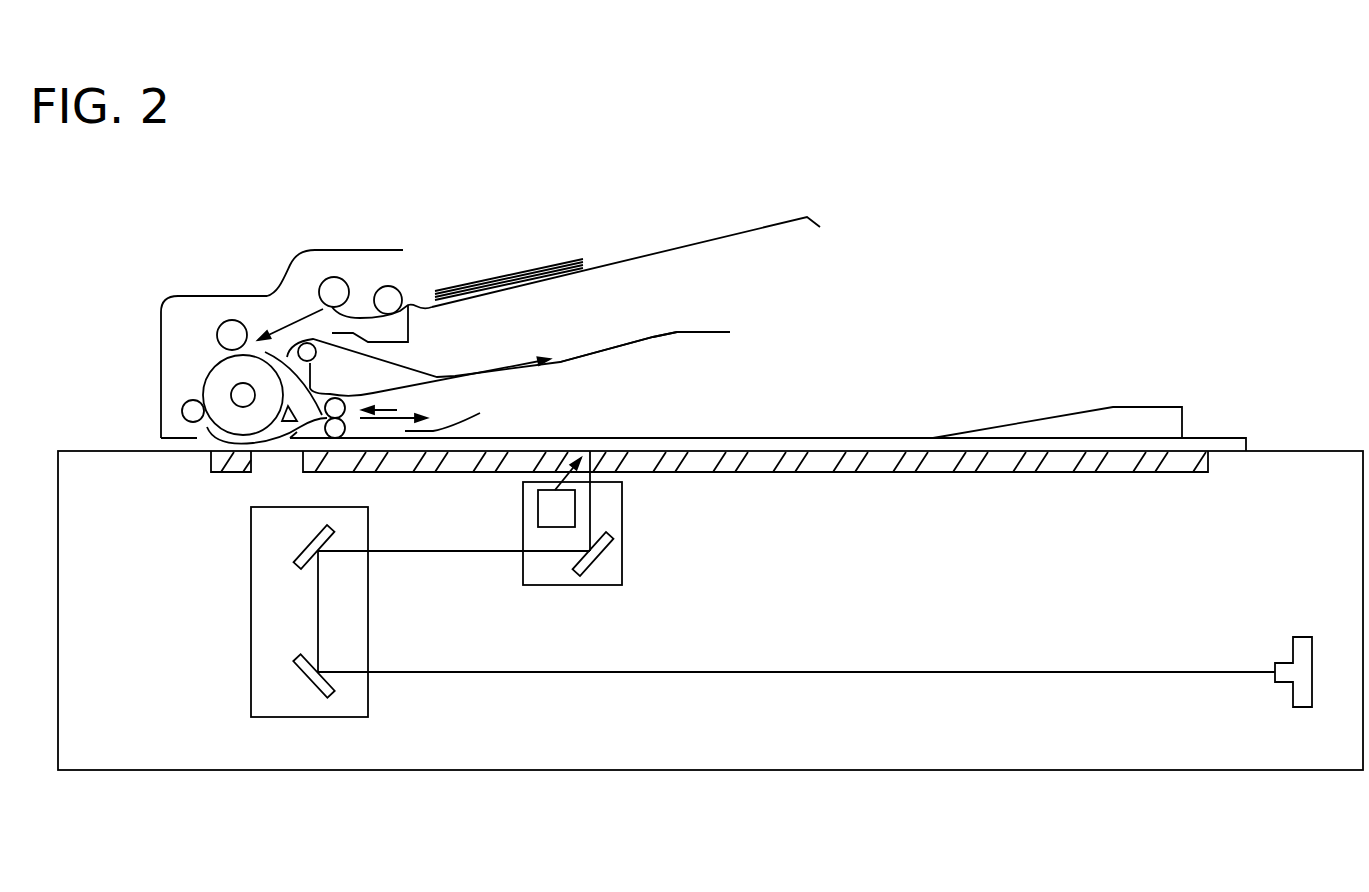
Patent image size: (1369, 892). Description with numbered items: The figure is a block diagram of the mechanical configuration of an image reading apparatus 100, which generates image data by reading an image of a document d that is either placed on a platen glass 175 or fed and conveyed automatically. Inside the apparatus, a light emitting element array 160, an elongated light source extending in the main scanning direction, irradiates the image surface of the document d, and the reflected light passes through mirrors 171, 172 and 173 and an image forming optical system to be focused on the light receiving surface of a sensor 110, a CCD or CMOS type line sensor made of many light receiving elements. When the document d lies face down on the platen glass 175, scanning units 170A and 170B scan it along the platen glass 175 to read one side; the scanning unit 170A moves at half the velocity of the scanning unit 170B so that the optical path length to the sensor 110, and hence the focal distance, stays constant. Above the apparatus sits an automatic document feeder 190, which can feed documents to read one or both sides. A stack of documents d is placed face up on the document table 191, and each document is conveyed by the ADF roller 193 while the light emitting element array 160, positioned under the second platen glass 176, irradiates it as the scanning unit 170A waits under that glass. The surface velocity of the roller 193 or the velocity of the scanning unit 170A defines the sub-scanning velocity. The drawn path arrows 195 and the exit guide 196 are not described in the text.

The image reading apparatus 100 is at (732, 583).
The sensor 110 is at (1298, 707).
The light emitting element array 160 is at (538, 510).
The scanning unit 170A is at (547, 585).
The scanning unit 170B is at (327, 717).
The mirror 171 is at (610, 552).
The mirror 172 is at (292, 555).
The mirror 173 is at (293, 668).
The platen glass 175 is at (1000, 472).
The second platen glass 176 is at (215, 473).
The automatic document feeder 190 is at (341, 189).
The document table 191 is at (522, 288).
The ADF roller 193 is at (212, 385).
The conveying path 195 is at (473, 412).
The discharge tray 196 is at (653, 335).
The document d is at (495, 280).